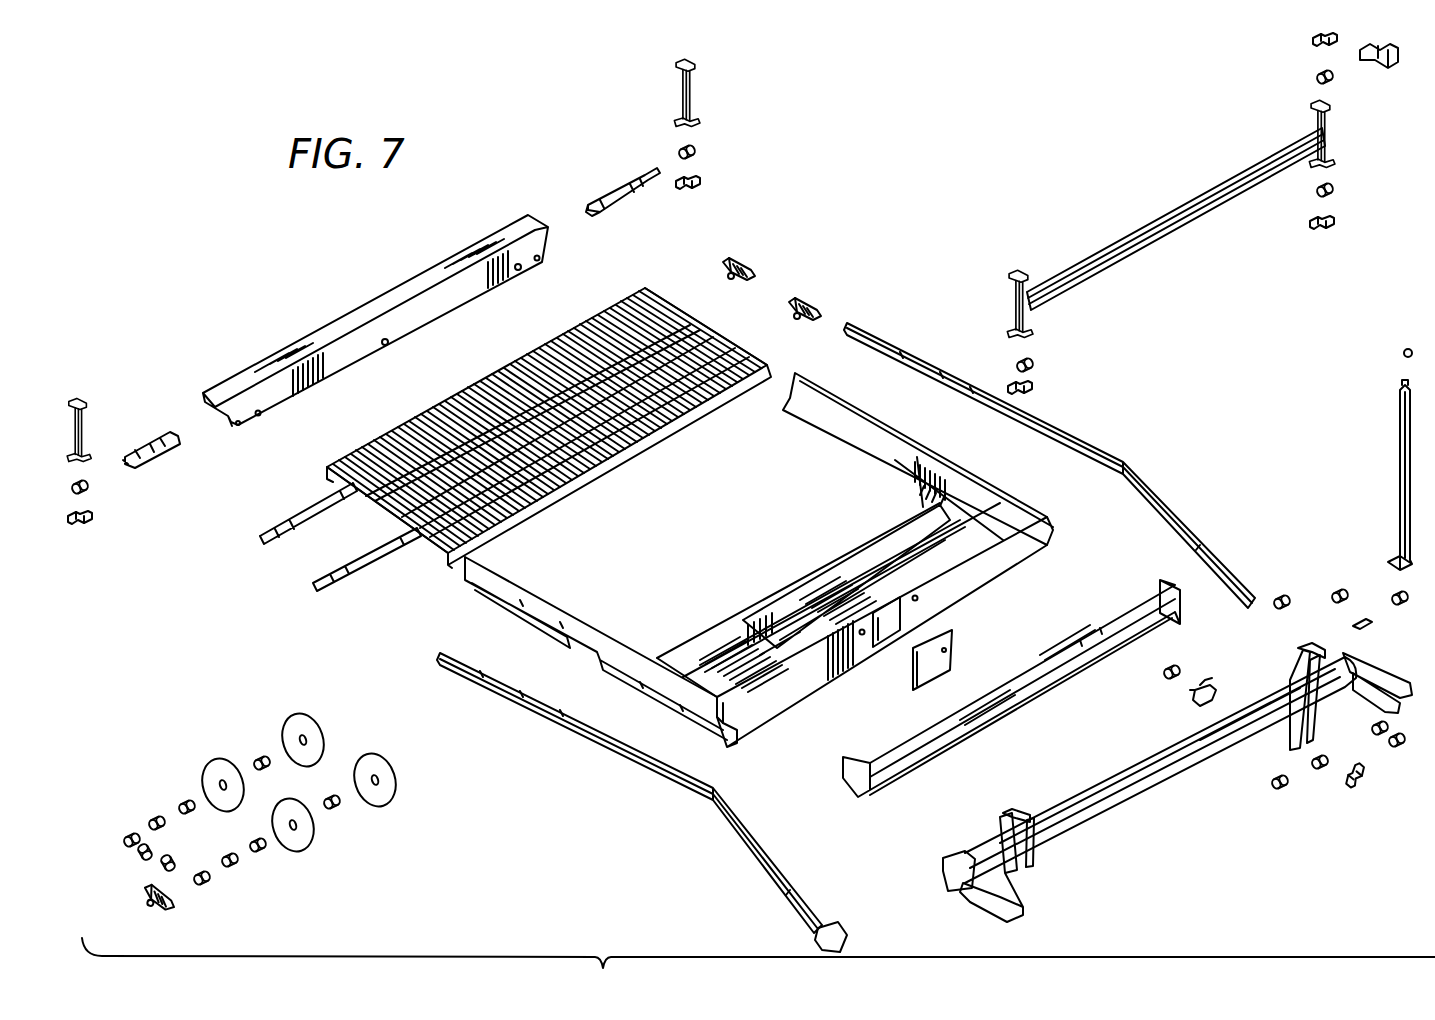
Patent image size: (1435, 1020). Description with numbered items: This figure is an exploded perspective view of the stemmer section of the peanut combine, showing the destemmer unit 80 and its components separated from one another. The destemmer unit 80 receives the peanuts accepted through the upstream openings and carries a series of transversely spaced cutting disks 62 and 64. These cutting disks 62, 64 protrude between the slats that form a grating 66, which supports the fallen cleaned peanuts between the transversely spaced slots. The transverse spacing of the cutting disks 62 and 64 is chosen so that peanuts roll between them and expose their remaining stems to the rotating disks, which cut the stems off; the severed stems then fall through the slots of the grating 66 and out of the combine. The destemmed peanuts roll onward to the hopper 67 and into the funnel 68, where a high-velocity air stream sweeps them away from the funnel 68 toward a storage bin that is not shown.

The cutting disk 62 is at (224, 760).
The cutting disk 64 is at (302, 786).
The grating 66 is at (630, 303).
The hopper 67 is at (698, 616).
The funnel 68 is at (783, 647).
The destemmer unit 80 is at (350, 736).